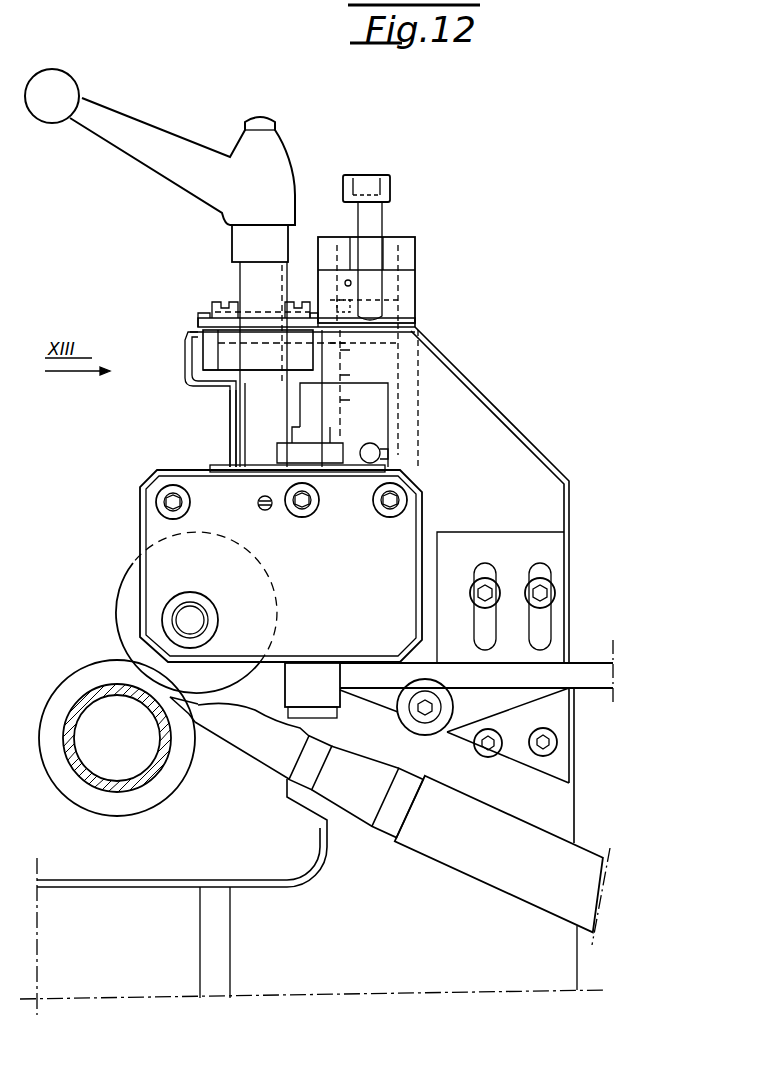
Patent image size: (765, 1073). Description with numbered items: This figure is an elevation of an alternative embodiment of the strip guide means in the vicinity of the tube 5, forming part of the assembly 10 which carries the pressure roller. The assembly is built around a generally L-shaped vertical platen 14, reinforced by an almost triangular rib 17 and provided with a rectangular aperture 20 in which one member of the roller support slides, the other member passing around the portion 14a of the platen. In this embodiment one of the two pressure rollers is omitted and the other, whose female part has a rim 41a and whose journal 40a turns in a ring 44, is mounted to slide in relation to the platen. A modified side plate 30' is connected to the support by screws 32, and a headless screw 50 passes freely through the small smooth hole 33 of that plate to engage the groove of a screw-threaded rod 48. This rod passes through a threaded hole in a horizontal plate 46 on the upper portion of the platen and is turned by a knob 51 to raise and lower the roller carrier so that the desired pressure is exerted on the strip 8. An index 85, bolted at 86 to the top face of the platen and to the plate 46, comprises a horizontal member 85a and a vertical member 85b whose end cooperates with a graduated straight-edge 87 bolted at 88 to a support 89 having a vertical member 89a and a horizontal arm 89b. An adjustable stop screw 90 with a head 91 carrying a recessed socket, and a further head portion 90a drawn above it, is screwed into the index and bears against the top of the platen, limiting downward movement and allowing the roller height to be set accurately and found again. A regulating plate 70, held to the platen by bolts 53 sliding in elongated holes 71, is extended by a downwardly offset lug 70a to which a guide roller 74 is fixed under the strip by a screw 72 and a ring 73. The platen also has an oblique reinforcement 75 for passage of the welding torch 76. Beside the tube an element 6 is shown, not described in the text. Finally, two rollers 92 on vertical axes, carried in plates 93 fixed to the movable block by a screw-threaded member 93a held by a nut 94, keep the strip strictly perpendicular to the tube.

The tube 5 is at (110, 685).
The roller 6 is at (67, 703).
The strip 8 is at (490, 677).
The assembly 10 is at (140, 503).
The vertical platen 14 is at (498, 455).
The portion of the platen 14a is at (240, 410).
The reinforcing rib 17 is at (218, 980).
The rectangular aperture 20 is at (388, 398).
The side plate 30' is at (120, 530).
The screws 32 is at (167, 500).
The smooth hole 33 is at (268, 511).
The journal 40a is at (188, 612).
The rim 41a is at (133, 593).
The ring 44 is at (208, 607).
The horizontal plate 46 is at (212, 350).
The screw-threaded rod 48 is at (260, 278).
The headless screw 50 is at (258, 500).
The knob 51 is at (143, 142).
The bolts 53 is at (548, 580).
The regulating plate 70 is at (478, 545).
The lug 70a is at (532, 693).
The elongated holes 71 is at (538, 625).
The screw 72 is at (436, 707).
The ring 73 is at (413, 716).
The guide roller 74 is at (427, 730).
The oblique reinforcement 75 is at (528, 768).
The welding torch 76 is at (325, 819).
The index 85 is at (198, 323).
The horizontal member 85a is at (205, 320).
The vertical member 85b is at (400, 305).
The bolts 86 is at (287, 307).
The graduated straight-edge 87 is at (445, 343).
The bolt 88 is at (415, 240).
The support 89 is at (408, 226).
The vertical member 89a is at (380, 308).
The horizontal arm 89b is at (408, 257).
The adjustable stop screw 90 is at (366, 218).
The screw head 90a is at (392, 182).
The head 91 is at (366, 175).
The rollers 92 is at (312, 685).
The plates 93 is at (322, 708).
The screw-threaded member 93a is at (300, 433).
The nut 94 is at (322, 453).